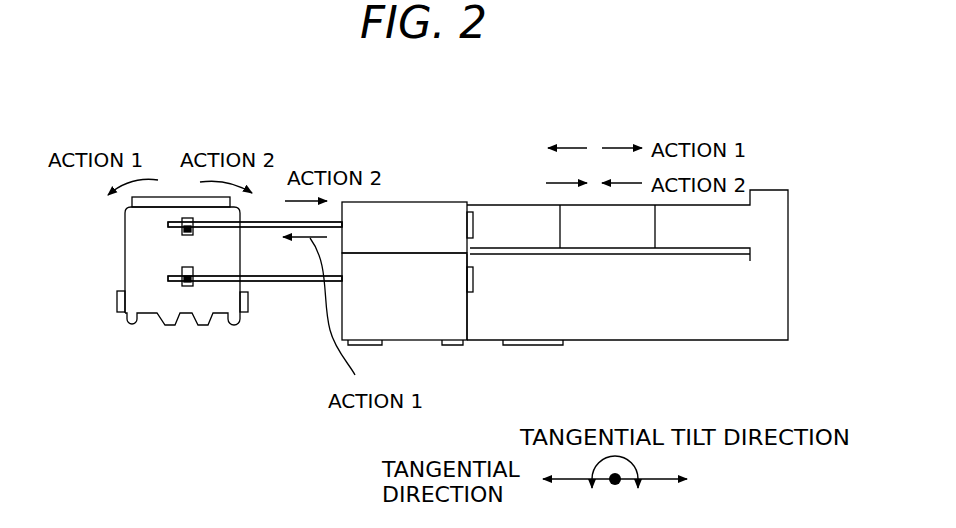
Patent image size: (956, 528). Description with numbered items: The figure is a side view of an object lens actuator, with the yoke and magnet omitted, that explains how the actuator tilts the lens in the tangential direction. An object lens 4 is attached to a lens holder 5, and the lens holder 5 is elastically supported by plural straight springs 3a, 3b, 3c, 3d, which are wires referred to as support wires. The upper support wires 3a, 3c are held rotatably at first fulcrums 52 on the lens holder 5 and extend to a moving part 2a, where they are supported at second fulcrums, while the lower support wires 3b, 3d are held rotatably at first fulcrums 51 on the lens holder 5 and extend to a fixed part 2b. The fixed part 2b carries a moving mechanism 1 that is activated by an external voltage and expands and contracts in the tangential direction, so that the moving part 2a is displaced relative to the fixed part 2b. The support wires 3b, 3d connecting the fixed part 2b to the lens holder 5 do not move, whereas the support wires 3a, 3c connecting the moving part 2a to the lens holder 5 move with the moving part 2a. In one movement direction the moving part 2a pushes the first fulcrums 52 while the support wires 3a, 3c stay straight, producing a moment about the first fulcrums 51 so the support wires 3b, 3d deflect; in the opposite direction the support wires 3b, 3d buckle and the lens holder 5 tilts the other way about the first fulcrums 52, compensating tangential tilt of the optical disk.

The moving mechanism 1 is at (602, 233).
The moving part 2a is at (402, 212).
The fixed part 2b is at (483, 330).
The straight spring 3a is at (258, 242).
The straight spring 3c is at (255, 163).
The straight spring 3b is at (262, 258).
The straight spring 3d is at (255, 330).
The object lens 4 is at (168, 202).
The lens holder 5 is at (147, 307).
The first fulcrum 51 is at (188, 285).
The first fulcrum 52 is at (182, 228).